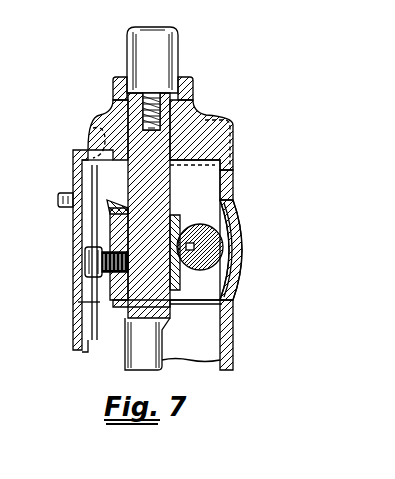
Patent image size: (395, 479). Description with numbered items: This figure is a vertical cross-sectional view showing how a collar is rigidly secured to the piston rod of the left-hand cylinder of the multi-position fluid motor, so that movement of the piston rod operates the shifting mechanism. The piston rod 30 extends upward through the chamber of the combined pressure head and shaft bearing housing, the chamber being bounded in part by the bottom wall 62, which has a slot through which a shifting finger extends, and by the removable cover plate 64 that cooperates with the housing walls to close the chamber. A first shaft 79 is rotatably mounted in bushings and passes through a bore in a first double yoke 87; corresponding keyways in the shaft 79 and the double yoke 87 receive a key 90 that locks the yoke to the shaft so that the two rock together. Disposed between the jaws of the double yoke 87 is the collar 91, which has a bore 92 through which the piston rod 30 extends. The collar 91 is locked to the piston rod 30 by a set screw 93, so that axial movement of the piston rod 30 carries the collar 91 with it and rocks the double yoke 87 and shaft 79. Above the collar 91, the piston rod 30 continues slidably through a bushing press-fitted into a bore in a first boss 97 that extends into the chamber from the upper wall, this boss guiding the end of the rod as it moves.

The piston rod 30 is at (135, 355).
The bottom wall 62 is at (227, 318).
The removable cover plate 64 is at (73, 218).
The first shaft 79 is at (215, 253).
The first double yoke 87 is at (223, 205).
The key 90 is at (194, 246).
The collar 91 is at (117, 297).
The bore 92 is at (222, 300).
The set screw 93 is at (85, 272).
The first boss 97 is at (224, 169).